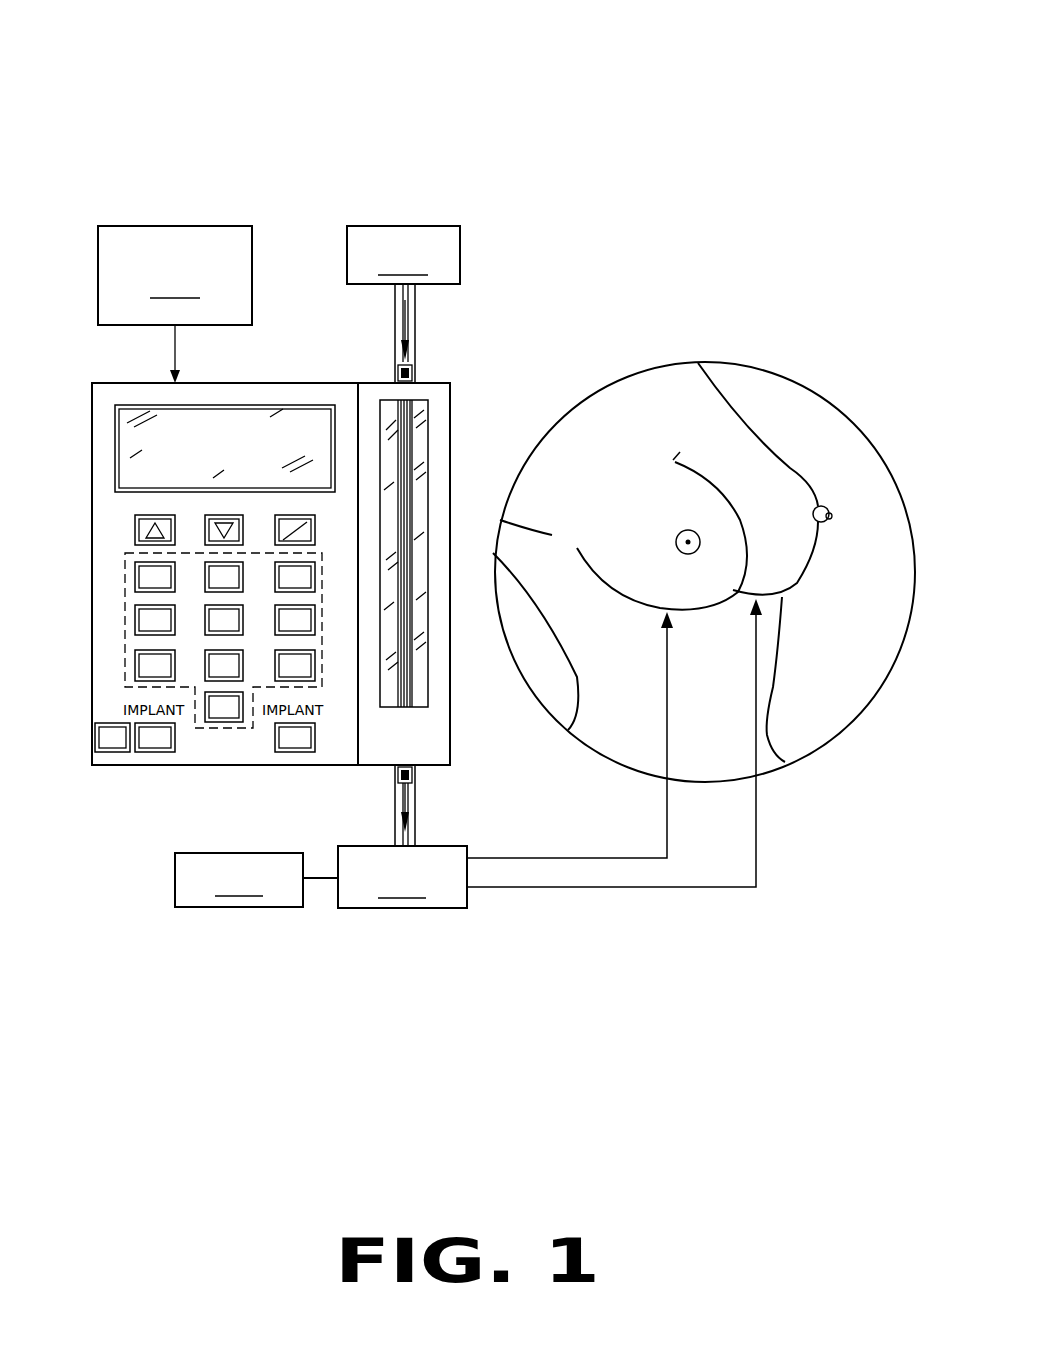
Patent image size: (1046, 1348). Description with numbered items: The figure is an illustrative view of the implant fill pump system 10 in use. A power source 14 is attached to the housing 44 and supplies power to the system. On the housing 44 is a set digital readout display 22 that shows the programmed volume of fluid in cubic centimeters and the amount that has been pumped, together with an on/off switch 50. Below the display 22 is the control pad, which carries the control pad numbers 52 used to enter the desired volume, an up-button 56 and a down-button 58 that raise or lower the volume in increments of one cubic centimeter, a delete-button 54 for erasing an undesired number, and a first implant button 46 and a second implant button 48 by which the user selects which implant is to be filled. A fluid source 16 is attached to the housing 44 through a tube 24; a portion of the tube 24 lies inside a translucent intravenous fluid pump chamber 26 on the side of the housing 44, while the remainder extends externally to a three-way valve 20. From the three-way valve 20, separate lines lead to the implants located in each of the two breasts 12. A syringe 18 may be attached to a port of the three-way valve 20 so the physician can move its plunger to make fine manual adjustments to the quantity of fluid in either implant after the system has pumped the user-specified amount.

The implant fill pump system 10 is at (352, 113).
The breast 12 is at (650, 490).
The power source 14 is at (175, 304).
The fluid source 16 is at (403, 255).
The syringe 18 is at (256, 880).
The three-way valve 20 is at (550, 753).
The display 22 is at (237, 423).
The tube 24 is at (417, 334).
The fluid pump chamber 26 is at (452, 410).
The housing 44 is at (92, 622).
The first implant button 46 is at (157, 737).
The second implant button 48 is at (307, 750).
The on/off switch 50 is at (300, 512).
The control pad numbers 52 is at (123, 672).
The delete-button 54 is at (115, 752).
The up-button 56 is at (135, 518).
The down-button 58 is at (215, 523).